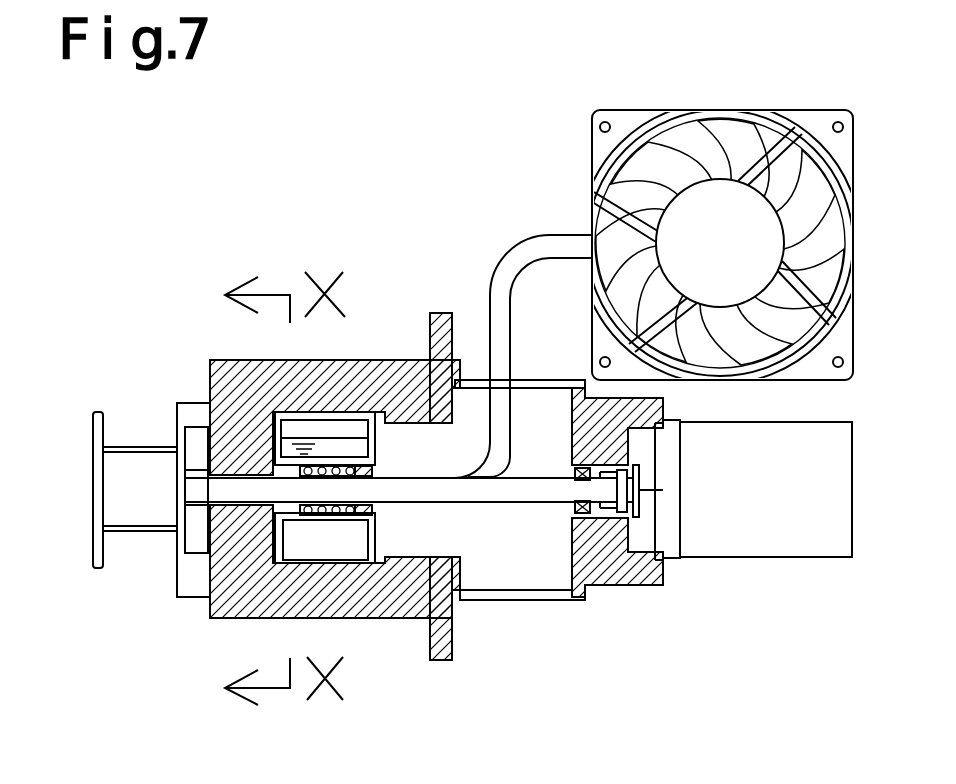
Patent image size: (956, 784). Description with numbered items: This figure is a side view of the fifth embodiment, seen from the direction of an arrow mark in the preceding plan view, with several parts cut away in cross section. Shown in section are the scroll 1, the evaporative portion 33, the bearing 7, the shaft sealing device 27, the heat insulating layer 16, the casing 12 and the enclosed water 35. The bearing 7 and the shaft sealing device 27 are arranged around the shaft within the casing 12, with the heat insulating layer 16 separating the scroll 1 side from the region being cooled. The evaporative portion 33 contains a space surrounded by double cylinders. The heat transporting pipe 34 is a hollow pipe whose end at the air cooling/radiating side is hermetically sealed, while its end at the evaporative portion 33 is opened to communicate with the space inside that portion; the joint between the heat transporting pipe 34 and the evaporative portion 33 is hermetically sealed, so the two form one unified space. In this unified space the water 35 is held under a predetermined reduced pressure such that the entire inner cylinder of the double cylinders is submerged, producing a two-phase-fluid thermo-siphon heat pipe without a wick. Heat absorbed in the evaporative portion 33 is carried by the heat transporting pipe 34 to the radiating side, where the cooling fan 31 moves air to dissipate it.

The scroll 1 is at (188, 398).
The bearing 7 is at (452, 618).
The casing 12 is at (562, 600).
The heat insulating layer 16 is at (252, 595).
The shaft sealing device 27 is at (322, 520).
The cooling fan 31 is at (590, 190).
The evaporative portion 33 is at (372, 543).
The heat transporting pipe 34 is at (490, 278).
The water 35 is at (333, 447).